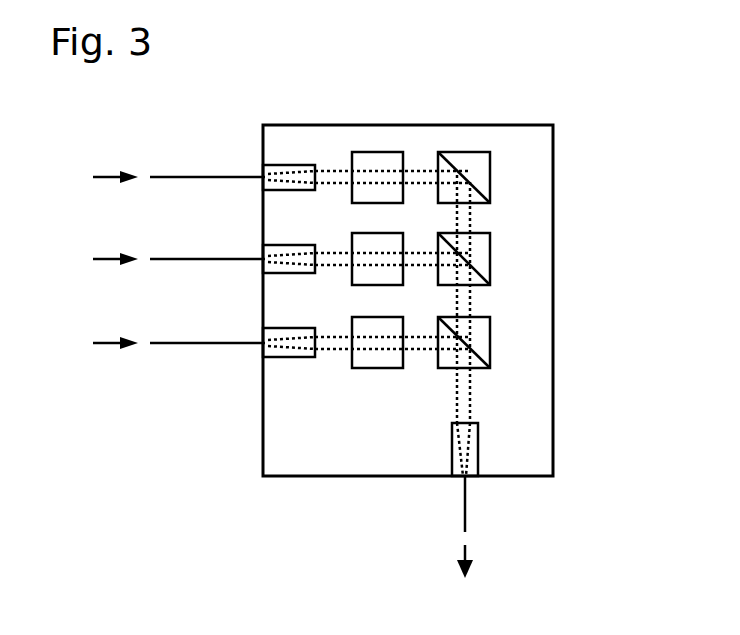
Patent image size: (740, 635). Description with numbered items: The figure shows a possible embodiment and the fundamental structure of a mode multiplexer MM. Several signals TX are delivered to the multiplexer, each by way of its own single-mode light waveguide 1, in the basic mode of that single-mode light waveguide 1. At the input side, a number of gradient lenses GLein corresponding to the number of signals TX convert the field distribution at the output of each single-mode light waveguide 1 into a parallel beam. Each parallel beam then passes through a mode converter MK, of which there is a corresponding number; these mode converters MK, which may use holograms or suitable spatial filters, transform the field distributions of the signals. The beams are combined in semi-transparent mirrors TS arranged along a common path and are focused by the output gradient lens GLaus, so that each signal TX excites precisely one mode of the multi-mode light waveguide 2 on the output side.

The single-mode light waveguide 1 is at (185, 259).
The multi-mode light waveguide 2 is at (462, 526).
The signals TX is at (91, 259).
The gradient lenses GLein is at (284, 165).
The mode converters MK is at (368, 158).
The semi-transparent mirrors TS is at (473, 160).
The mode multiplexer MM is at (538, 147).
The gradient lens GLaus is at (473, 463).